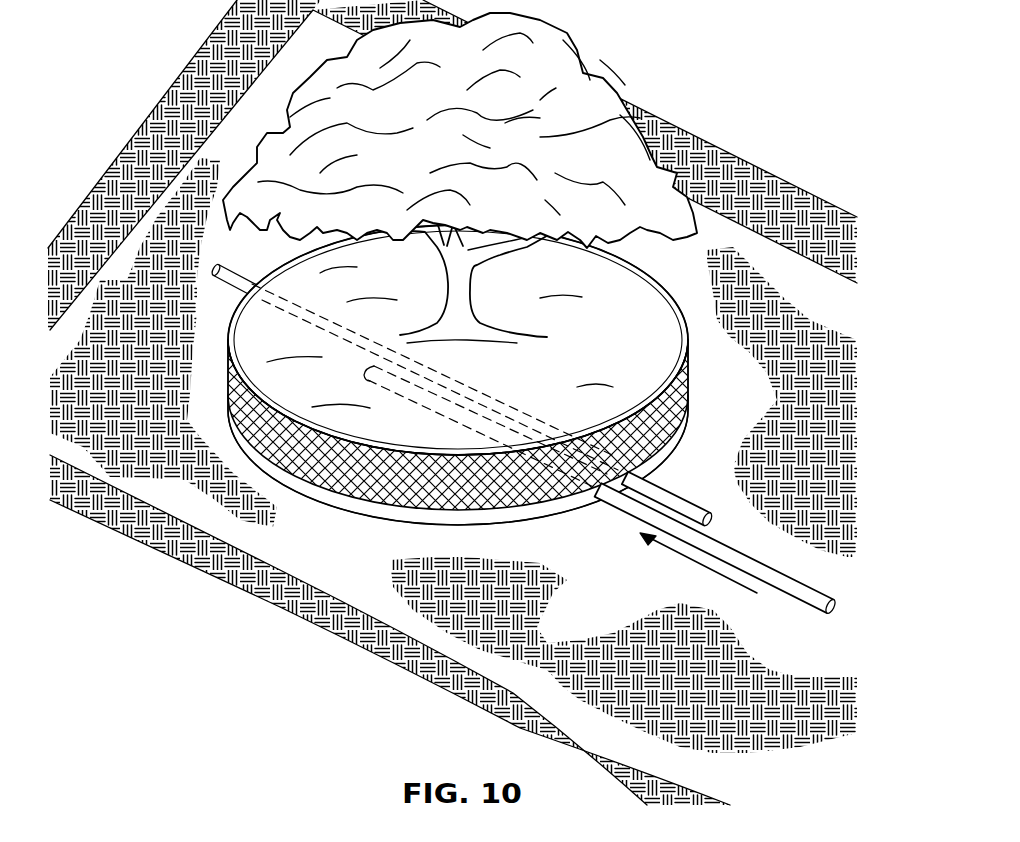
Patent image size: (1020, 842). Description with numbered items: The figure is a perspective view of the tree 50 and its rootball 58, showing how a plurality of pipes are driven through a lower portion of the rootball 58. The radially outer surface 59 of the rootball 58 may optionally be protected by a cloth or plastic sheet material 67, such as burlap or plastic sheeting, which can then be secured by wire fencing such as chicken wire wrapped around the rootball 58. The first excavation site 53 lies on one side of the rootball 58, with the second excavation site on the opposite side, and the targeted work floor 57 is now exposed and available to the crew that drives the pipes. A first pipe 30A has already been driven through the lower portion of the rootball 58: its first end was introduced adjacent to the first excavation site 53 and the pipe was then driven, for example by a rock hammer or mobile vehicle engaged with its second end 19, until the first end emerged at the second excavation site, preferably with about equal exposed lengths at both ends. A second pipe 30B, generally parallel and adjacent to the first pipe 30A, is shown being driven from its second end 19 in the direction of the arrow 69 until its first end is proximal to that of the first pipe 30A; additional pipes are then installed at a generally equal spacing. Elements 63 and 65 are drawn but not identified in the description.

The tree 50 is at (634, 41).
The second end of pipe 19 is at (838, 600).
The first pipe 30A is at (662, 479).
The second pipe 30B is at (733, 571).
The first excavation site 53 is at (349, 566).
The targeted work floor 57 is at (606, 614).
The rootball 58 is at (621, 338).
The radially outer surface of rootball 59 is at (389, 492).
The container wall 63 is at (693, 390).
The conduit 65 is at (488, 392).
The cloth or plastic sheet material 67 is at (556, 488).
The arrow 69 is at (663, 550).